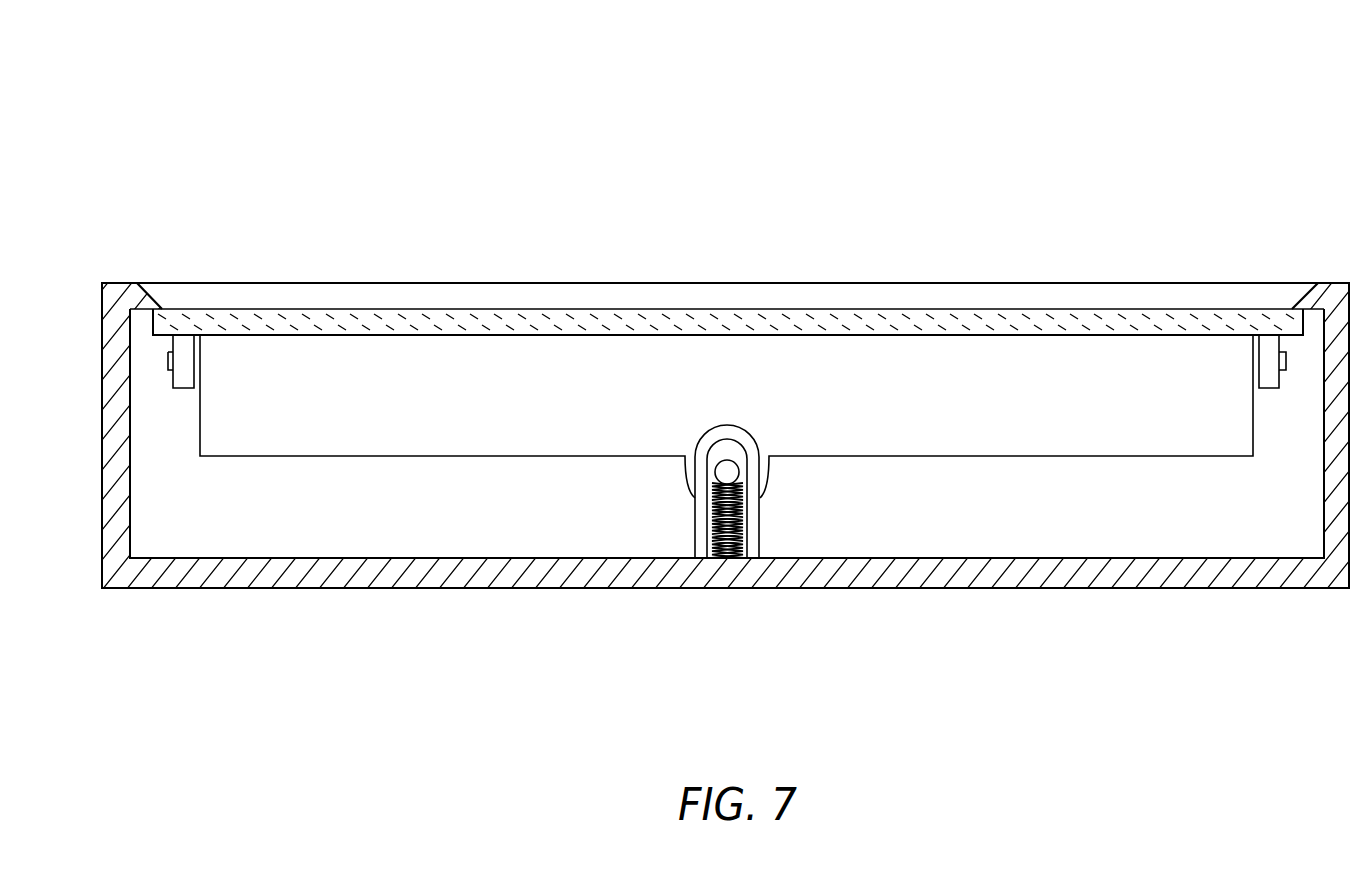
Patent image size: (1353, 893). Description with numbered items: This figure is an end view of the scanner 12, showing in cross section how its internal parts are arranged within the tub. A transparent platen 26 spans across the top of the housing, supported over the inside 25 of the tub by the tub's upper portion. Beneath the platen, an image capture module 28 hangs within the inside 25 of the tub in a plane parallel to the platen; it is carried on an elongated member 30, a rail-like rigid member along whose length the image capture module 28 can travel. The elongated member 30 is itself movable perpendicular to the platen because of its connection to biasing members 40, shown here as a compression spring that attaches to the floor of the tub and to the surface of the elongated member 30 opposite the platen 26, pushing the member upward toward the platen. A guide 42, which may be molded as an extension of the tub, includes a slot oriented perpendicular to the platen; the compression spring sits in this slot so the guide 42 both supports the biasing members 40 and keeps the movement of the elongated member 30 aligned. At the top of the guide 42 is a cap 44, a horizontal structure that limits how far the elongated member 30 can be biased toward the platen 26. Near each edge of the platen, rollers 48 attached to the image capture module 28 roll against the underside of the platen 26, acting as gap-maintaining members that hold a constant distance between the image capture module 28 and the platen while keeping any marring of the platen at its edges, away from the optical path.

The scanner 12 is at (1007, 130).
The inside of the tub 25 is at (1007, 517).
The transparent platen 26 is at (405, 318).
The image capture module 28 is at (565, 360).
The elongated member 30 is at (720, 473).
The biasing members 40 is at (730, 553).
The guides 42 is at (755, 512).
The cap 44 is at (745, 432).
The rollers 48 is at (185, 348).